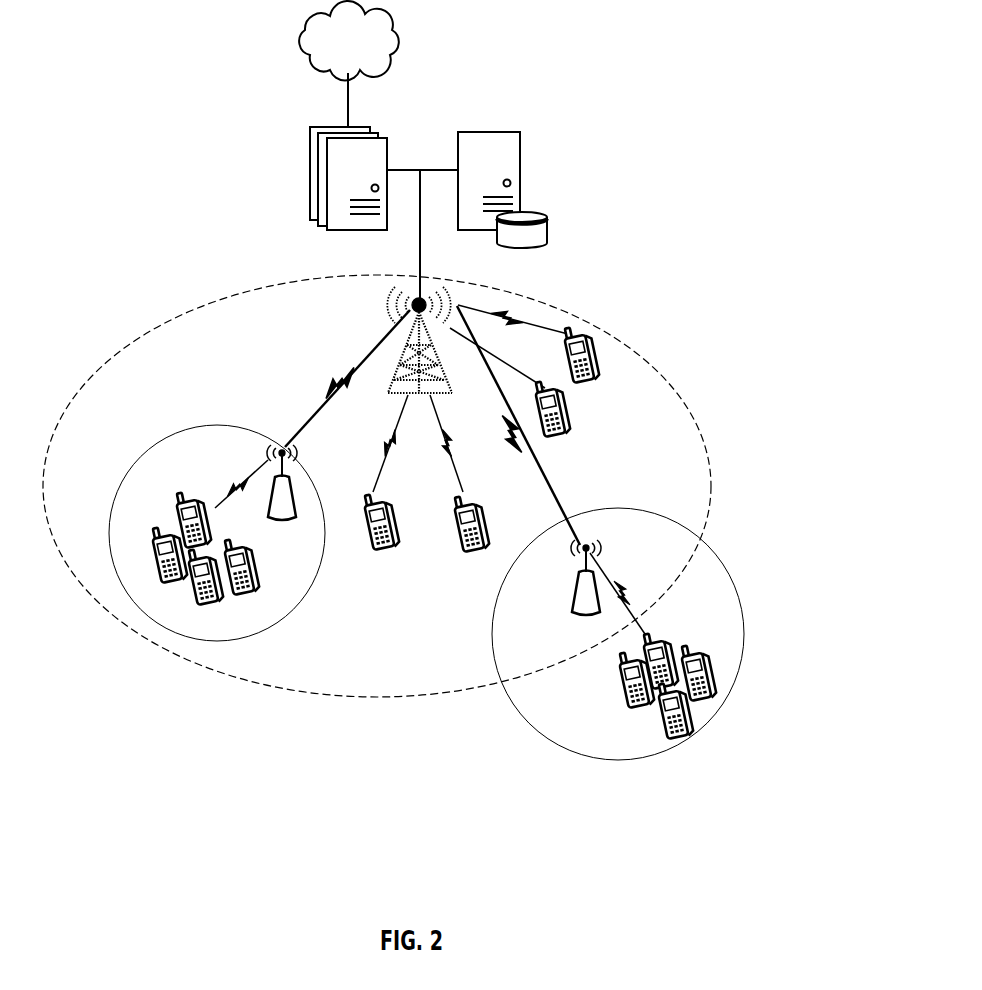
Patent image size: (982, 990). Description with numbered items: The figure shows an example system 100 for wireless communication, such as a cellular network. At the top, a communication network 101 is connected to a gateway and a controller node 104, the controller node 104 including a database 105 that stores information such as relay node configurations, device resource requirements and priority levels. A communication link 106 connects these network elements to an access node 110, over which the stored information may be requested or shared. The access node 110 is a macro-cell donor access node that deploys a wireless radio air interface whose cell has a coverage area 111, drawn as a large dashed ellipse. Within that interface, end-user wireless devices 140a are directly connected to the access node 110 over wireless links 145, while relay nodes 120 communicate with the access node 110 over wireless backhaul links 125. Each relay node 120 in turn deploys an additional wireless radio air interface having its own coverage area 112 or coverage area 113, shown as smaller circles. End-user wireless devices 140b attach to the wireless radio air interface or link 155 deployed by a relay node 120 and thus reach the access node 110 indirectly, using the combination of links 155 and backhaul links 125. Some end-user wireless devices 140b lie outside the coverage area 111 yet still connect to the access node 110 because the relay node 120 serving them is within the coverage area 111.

The system 100 is at (518, 70).
The communication network 101 is at (365, 52).
The controller node 104 is at (520, 152).
The database 105 is at (547, 225).
The communication link 106 is at (420, 242).
The access node 110 is at (401, 385).
The coverage area 111 is at (347, 697).
The coverage area 112 is at (268, 625).
The coverage area 113 is at (730, 688).
The relay node 120 is at (310, 148).
The wireless communication link 125 is at (336, 385).
The end-user wireless device 140a is at (596, 358).
The end-user wireless device 140b is at (168, 595).
The wireless link 145 is at (496, 322).
The wireless radio air interface or link 155 is at (235, 484).